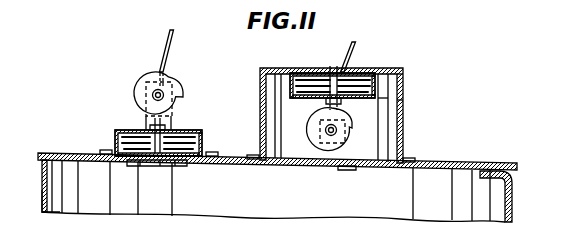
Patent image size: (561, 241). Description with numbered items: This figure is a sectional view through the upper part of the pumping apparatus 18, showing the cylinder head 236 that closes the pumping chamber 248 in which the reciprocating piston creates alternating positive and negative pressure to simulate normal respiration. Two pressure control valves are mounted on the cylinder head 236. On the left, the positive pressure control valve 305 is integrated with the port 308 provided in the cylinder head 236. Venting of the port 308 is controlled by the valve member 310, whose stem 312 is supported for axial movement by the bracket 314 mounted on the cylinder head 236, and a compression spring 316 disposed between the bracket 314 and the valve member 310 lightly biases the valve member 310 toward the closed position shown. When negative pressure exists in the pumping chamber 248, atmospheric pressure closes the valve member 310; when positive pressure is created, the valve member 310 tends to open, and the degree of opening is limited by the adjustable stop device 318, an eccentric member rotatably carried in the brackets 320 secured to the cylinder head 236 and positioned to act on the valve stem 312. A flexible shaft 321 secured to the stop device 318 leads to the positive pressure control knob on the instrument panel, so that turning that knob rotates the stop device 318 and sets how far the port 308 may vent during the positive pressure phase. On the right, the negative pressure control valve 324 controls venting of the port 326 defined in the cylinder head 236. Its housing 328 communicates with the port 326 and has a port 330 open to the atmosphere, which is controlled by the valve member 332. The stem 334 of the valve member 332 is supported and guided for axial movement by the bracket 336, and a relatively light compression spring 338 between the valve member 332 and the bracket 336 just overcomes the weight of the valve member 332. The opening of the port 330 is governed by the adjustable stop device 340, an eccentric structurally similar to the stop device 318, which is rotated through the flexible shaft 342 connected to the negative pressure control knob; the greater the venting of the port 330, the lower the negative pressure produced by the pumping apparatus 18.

The pumping apparatus 18 is at (40, 200).
The cylinder head 236 is at (463, 165).
The pumping chamber 248 is at (478, 198).
The positive pressure control valve 305 is at (142, 93).
The port 308 is at (182, 165).
The valve member 310 is at (137, 166).
The stem 312 is at (172, 127).
The bracket 314 is at (120, 134).
The compression spring 316 is at (126, 141).
The adjustable stop device 318 is at (137, 76).
The brackets 320 is at (170, 76).
The flexible shaft 321 is at (166, 40).
The negative pressure control valve 324 is at (408, 92).
The port 326 is at (352, 167).
The housing 328 is at (404, 114).
The port 330 is at (357, 70).
The valve member 332 is at (313, 71).
The stem 334 is at (322, 103).
The bracket 336 is at (376, 100).
The compression spring 338 is at (300, 87).
The adjustable stop device 340 is at (308, 129).
The flexible shaft 342 is at (350, 46).